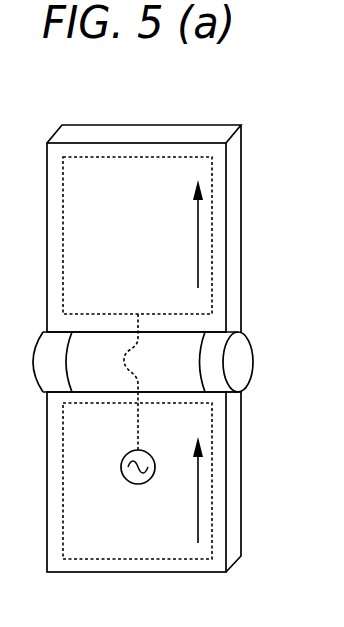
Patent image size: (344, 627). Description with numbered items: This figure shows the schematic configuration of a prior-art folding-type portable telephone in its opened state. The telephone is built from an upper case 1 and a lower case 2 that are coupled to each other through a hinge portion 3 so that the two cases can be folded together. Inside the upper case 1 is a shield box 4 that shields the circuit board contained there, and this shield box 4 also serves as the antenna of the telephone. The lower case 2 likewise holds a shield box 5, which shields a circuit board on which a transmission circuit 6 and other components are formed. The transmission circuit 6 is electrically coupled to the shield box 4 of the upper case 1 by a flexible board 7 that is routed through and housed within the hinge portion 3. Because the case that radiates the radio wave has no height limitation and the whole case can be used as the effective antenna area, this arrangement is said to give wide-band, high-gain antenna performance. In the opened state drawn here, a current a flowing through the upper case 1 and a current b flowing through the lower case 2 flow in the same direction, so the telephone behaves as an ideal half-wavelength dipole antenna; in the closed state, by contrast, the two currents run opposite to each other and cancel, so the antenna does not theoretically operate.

The upper case 1 is at (241, 216).
The lower case 2 is at (242, 473).
The hinge portion 3 is at (255, 362).
The shield box 4 is at (65, 242).
The shield box 5 is at (65, 476).
The transmission circuit 6 is at (152, 461).
The flexible board 7 is at (130, 364).
The current a is at (198, 249).
The current b is at (198, 512).